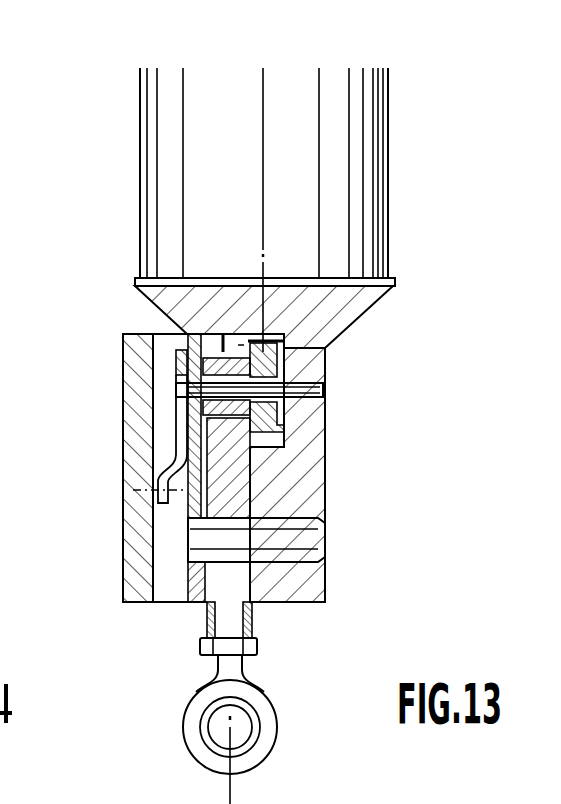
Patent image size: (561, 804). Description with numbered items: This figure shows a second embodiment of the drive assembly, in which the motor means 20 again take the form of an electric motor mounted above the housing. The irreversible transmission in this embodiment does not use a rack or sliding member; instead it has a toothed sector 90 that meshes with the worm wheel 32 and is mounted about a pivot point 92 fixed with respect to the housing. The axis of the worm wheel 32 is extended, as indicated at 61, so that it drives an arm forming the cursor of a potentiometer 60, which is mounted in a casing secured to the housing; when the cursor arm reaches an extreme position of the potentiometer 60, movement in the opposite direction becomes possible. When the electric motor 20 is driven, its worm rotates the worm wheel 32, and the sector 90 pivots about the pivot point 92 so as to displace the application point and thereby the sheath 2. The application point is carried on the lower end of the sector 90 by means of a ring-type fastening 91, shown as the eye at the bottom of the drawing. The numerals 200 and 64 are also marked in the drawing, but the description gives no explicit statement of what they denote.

The tubular housing 200 is at (140, 170).
The electric motor 20 is at (138, 252).
The sheath 2 is at (280, 302).
The potentiometer 60 is at (112, 365).
The extended axis of worm wheel 61 is at (177, 385).
The locking lever 64 is at (177, 438).
The worm wheel 32 is at (300, 423).
The toothed sector 90 is at (233, 484).
The pivot point 92 is at (323, 558).
The ring-type fastening 91 is at (248, 675).